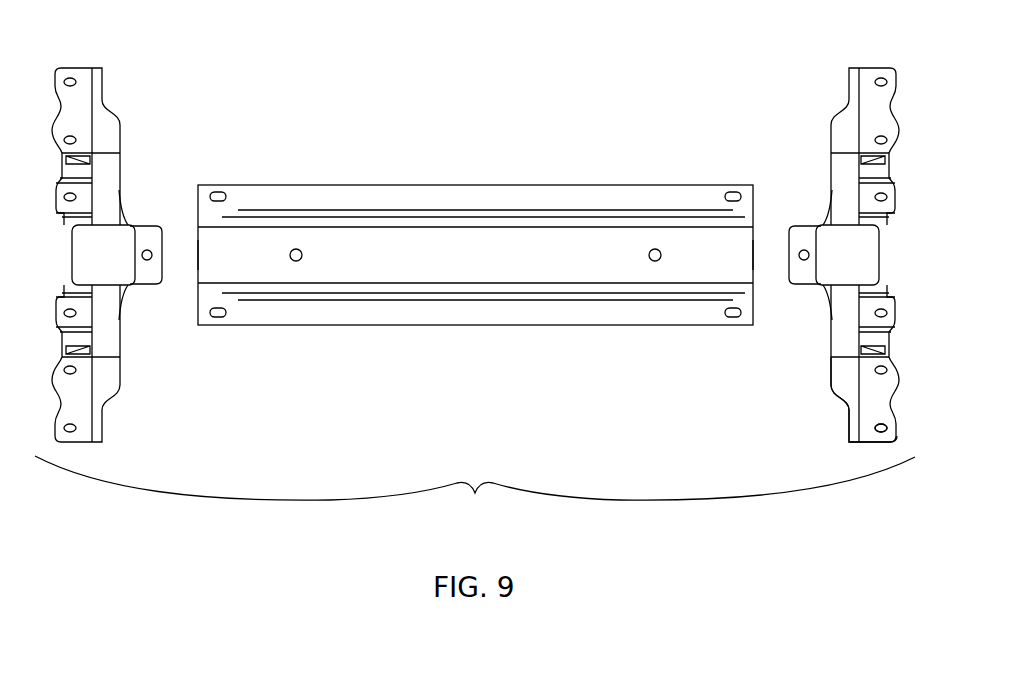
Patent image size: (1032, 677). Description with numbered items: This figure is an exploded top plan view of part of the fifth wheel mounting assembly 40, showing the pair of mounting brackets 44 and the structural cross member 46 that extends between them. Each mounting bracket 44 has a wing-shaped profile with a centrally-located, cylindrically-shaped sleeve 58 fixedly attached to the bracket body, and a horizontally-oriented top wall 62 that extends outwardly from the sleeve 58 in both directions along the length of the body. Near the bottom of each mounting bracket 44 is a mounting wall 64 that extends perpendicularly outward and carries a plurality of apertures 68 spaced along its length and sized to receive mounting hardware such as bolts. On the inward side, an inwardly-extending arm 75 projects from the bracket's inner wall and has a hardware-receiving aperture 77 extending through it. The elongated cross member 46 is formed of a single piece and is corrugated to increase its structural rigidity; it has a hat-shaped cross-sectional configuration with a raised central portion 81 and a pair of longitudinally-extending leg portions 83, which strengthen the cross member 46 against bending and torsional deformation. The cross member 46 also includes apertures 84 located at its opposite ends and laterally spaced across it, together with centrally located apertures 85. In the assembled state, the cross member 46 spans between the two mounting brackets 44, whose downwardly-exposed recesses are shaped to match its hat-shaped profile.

The fifth wheel mounting assembly 40 is at (475, 491).
The mounting bracket 44 is at (496, 225).
The cross member 46 is at (475, 223).
The sleeve 58 is at (117, 236).
The top wall 62 is at (110, 120).
The mounting wall 64 is at (877, 401).
The apertures 68 is at (883, 424).
The inwardly-extending arm 75 is at (165, 279).
The hardware-receiving aperture 77 is at (148, 262).
The central portion 81 is at (475, 209).
The leg portions 83 is at (630, 196).
The apertures 84 is at (215, 192).
The apertures 85 is at (295, 248).